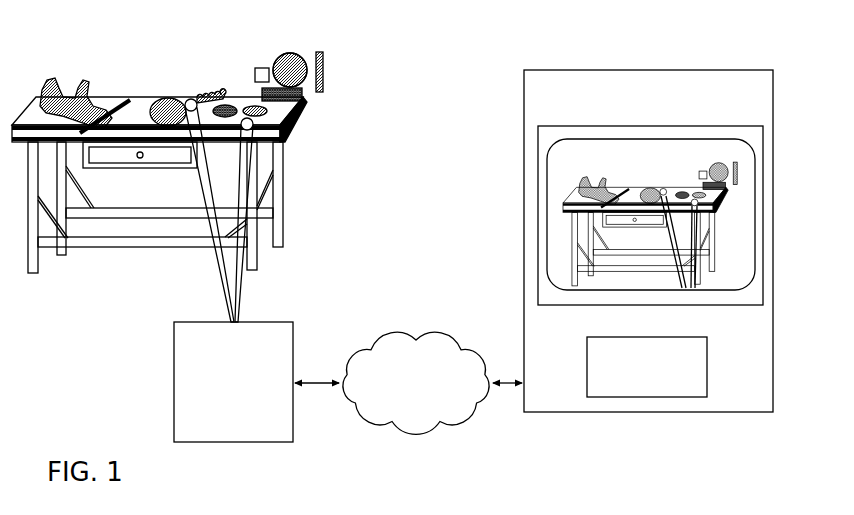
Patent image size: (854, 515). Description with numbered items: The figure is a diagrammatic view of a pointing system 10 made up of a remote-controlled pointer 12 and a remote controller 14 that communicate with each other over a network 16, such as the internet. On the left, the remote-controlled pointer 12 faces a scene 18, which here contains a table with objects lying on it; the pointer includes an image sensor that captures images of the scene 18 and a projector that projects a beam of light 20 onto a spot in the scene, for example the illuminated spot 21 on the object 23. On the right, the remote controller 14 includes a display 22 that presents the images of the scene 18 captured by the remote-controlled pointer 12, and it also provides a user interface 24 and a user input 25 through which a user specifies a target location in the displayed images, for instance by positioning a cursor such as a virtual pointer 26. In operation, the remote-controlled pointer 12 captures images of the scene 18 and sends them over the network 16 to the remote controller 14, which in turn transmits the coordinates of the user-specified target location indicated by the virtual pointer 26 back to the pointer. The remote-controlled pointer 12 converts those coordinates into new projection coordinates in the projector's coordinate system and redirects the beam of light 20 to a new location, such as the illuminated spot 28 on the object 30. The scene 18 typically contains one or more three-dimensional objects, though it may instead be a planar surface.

The pointing system 10 is at (118, 346).
The remote-controlled pointer 12 is at (173, 382).
The remote controller 14 is at (732, 71).
The network 16 is at (418, 334).
The scene 18 is at (73, 61).
The beam of light 20 is at (240, 294).
The illuminated spot 21 is at (284, 143).
The display 22 is at (725, 299).
The object 23 is at (300, 108).
The user interface 24 is at (560, 173).
The user input 25 is at (710, 370).
The virtual pointer 26 is at (662, 200).
The illuminated spot 28 is at (190, 99).
The object 30 is at (212, 92).